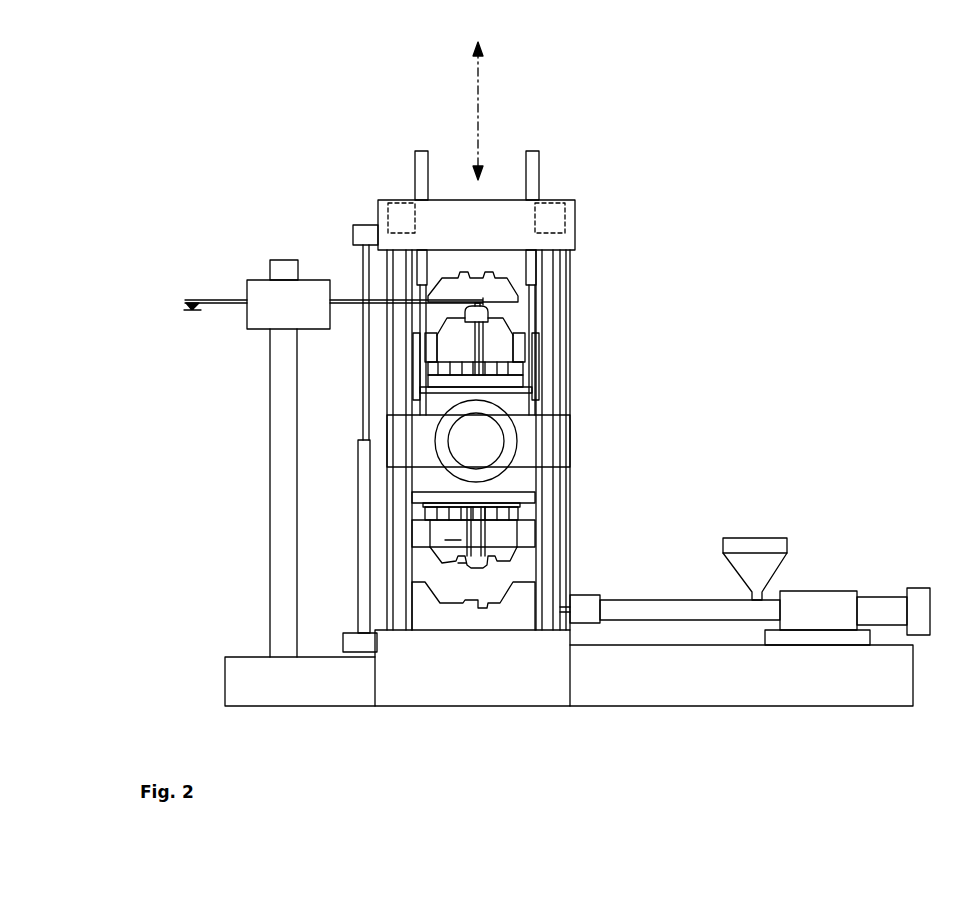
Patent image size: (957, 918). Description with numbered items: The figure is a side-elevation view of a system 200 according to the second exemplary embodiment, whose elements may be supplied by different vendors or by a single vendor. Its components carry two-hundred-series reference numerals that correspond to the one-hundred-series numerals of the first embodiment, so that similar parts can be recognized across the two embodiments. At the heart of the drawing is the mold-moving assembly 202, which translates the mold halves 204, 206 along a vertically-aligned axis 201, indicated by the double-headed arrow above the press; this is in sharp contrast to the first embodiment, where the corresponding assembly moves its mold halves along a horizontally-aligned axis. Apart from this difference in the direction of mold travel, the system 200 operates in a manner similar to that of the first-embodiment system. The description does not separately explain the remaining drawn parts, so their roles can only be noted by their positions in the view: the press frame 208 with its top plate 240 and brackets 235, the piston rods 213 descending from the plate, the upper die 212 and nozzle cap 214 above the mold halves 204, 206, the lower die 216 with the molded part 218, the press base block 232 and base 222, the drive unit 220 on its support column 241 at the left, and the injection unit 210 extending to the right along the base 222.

The system 200 is at (840, 322).
The vertically-aligned axis 201 is at (479, 119).
The mold-moving assembly 202 is at (483, 443).
The mold half 204 is at (503, 348).
The mold half 206 is at (529, 533).
The press frame 208 is at (570, 322).
The injection unit 210 is at (573, 579).
The upper die 212 is at (505, 268).
The piston rods 213 is at (535, 268).
The nozzle cap 214 is at (473, 320).
The lower die 216 is at (523, 617).
The molded part 218 is at (458, 568).
The drive unit 220 is at (269, 297).
The base 222 is at (809, 730).
The press base block 232 is at (512, 685).
The clamp bracket 235 is at (403, 214).
The top plate 240 is at (451, 238).
The support column 241 is at (368, 580).